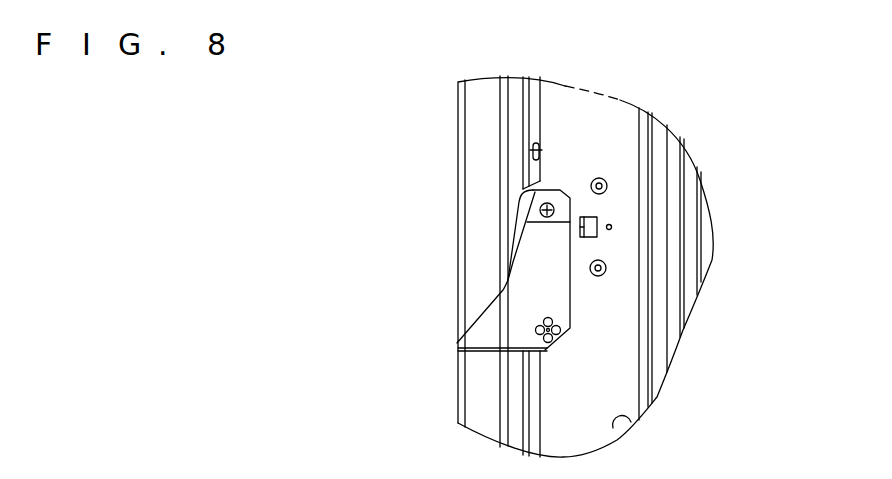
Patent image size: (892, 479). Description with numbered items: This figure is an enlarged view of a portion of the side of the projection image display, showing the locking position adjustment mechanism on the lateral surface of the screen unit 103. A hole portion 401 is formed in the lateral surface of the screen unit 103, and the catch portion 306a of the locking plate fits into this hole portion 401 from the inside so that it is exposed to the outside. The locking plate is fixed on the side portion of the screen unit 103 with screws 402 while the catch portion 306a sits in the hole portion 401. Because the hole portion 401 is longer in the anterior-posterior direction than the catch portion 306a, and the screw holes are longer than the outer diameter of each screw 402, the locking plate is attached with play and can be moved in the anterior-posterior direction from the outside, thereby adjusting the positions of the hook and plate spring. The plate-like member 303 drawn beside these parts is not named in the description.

The screen unit 103 is at (593, 407).
The bracket plate 303 is at (500, 337).
The catch portion 306a is at (578, 227).
The hole portion 401 is at (596, 216).
The screw 402 is at (598, 178).